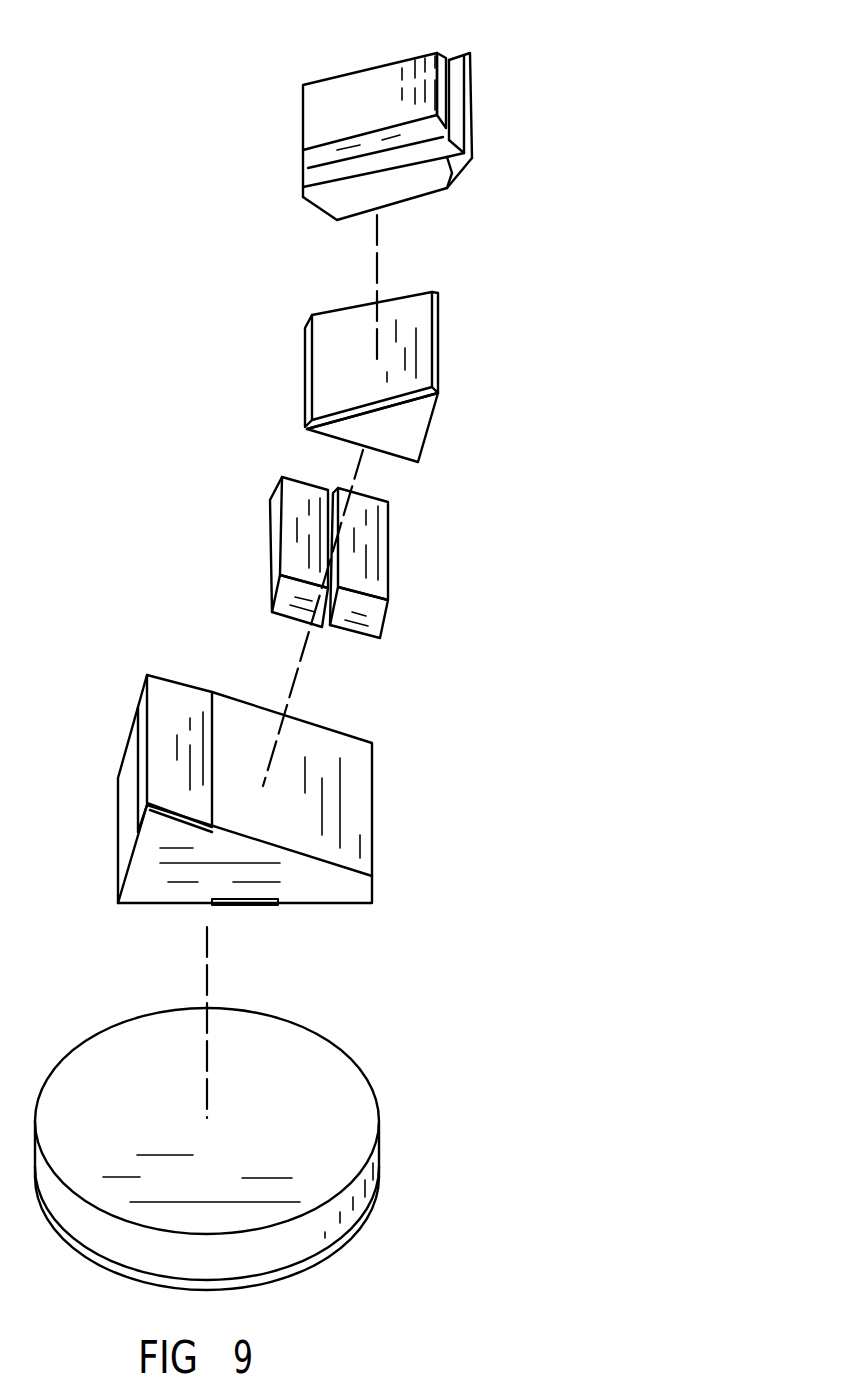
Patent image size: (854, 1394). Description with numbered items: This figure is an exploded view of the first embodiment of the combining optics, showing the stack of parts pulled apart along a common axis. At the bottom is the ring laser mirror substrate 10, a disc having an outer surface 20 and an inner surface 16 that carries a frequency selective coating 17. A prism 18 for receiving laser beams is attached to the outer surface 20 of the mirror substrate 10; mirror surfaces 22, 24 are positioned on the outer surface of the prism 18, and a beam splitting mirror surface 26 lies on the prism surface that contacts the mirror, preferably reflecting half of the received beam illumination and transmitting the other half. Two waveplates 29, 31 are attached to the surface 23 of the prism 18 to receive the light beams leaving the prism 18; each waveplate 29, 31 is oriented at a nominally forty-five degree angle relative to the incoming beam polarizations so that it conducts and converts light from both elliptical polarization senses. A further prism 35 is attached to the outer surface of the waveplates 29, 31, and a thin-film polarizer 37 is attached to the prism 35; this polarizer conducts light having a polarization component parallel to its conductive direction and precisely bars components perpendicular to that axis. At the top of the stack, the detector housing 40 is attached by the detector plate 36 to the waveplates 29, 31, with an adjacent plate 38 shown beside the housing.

The ring laser mirror substrate 10 is at (236, 1162).
The inner surface 16 is at (325, 1250).
The frequency selective coating 17 is at (292, 1275).
The prism 18 is at (177, 893).
The outer surface 20 is at (325, 1087).
The mirror surface 22 is at (242, 797).
The surface of the prism 23 is at (352, 807).
The mirror surface 24 is at (165, 690).
The beam splitting mirror surface 26 is at (252, 905).
The waveplate 29 is at (290, 542).
The waveplate 31 is at (383, 552).
The prism 35 is at (418, 430).
The detector plate 36 is at (458, 172).
The thin-film polarizer 37 is at (335, 320).
The rear plate 38 is at (475, 86).
The detector housing 40 is at (410, 72).